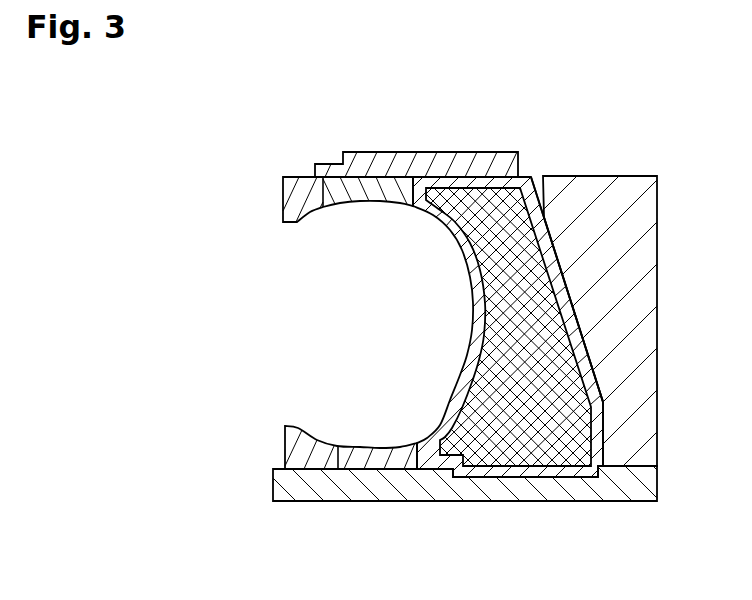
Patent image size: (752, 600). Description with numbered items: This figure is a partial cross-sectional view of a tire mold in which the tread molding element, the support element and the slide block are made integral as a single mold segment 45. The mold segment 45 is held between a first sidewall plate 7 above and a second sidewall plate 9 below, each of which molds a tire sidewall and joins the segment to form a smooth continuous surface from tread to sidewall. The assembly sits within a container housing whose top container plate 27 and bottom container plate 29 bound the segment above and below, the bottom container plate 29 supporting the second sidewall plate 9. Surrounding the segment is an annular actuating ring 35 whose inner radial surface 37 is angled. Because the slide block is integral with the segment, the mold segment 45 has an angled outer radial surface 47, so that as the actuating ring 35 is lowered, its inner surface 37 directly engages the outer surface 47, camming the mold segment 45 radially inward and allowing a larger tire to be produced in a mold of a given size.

The first sidewall plate 7 is at (358, 200).
The top container plate 27 is at (398, 170).
The mold segment 45 is at (527, 177).
The outer radial surface 47 is at (560, 264).
The inner radial surface 37 is at (573, 327).
The actuating ring 35 is at (637, 353).
The bottom container plate 29 is at (322, 490).
The second sidewall plate 9 is at (376, 447).